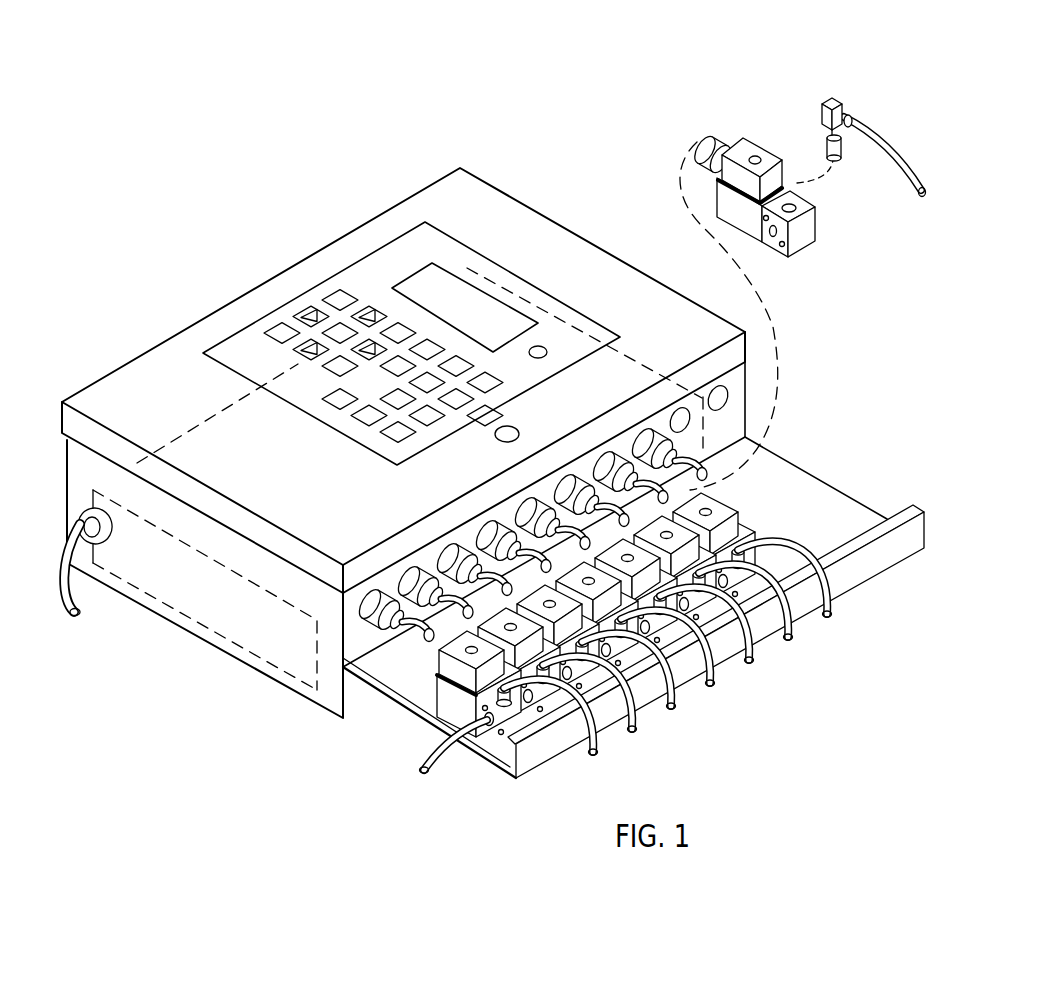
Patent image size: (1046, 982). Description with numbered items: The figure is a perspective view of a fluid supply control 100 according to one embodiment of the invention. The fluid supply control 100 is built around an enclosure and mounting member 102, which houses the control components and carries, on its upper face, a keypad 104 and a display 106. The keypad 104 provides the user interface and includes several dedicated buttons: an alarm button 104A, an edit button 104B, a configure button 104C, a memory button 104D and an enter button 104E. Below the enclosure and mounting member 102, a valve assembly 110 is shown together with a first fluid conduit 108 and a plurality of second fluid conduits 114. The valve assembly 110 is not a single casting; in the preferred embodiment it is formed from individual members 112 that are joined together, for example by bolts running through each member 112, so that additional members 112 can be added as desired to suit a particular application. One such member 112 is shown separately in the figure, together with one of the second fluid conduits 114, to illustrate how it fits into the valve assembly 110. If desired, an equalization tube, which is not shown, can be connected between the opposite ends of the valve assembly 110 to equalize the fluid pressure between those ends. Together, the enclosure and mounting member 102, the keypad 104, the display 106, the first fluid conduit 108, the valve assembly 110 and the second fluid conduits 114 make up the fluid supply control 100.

The fluid supply control 100 is at (363, 100).
The enclosure and mounting member 102 is at (117, 369).
The keypad 104 is at (405, 232).
The alarm button 104A is at (333, 297).
The edit button 104B is at (282, 333).
The configure button 104C is at (400, 328).
The memory button 104D is at (330, 369).
The enter button 104E is at (392, 432).
The display 106 is at (518, 275).
The first fluid conduit 108 is at (444, 765).
The valve assembly 110 is at (450, 690).
The member 112 is at (795, 264).
The second fluid conduit 114 is at (885, 143).